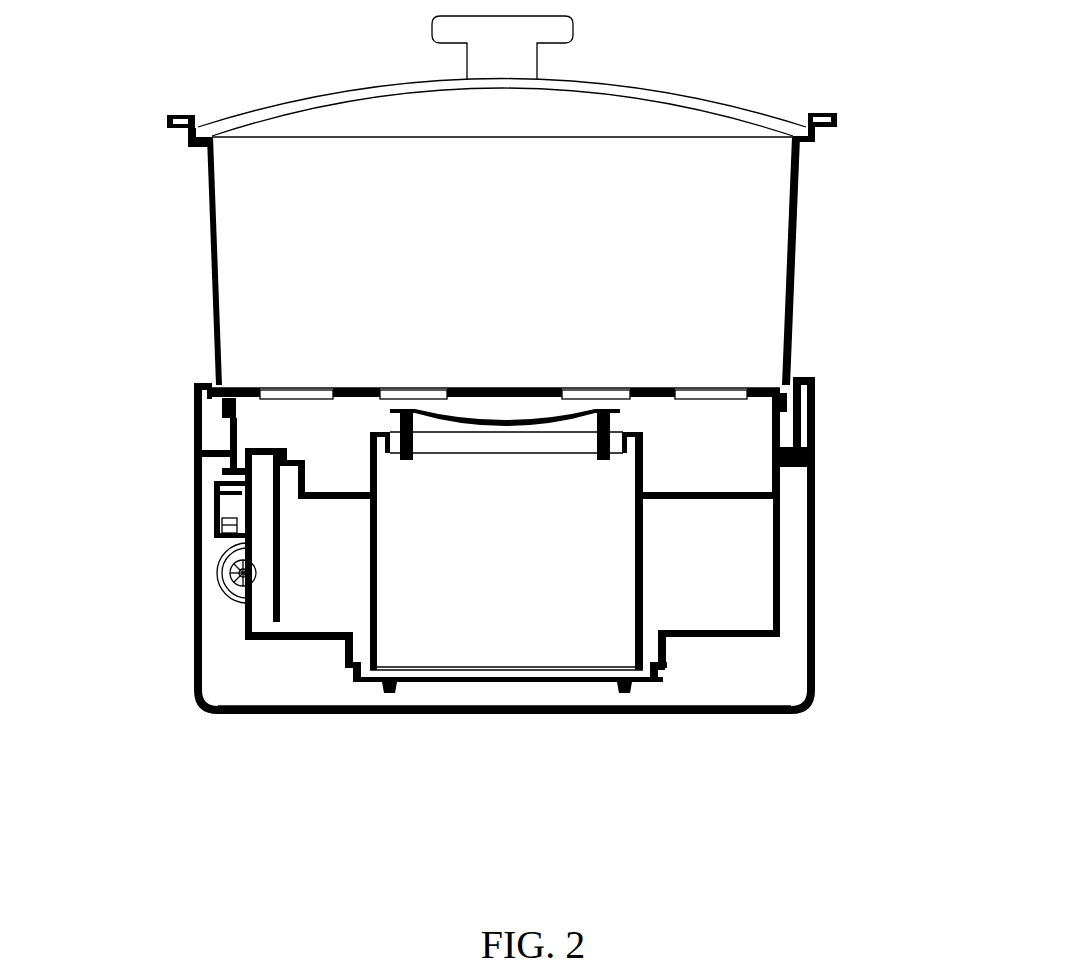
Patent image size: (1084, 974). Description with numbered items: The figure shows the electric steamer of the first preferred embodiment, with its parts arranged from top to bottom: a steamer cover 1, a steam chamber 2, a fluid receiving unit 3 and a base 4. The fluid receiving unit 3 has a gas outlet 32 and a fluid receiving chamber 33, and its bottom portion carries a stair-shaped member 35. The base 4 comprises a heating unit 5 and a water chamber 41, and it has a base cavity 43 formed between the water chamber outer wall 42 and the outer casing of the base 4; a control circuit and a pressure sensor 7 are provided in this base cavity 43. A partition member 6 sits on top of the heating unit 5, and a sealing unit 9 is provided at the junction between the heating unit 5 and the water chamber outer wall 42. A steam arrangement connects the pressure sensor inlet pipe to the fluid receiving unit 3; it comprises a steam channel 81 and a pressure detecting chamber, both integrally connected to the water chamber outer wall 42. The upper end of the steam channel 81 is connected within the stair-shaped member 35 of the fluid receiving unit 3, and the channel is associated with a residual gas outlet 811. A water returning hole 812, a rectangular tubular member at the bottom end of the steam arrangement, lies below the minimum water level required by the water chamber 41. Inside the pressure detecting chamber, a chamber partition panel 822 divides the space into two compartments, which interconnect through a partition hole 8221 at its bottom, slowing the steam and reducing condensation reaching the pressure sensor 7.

The steamer cover 1 is at (705, 103).
The steam chamber 2 is at (800, 256).
The fluid receiving unit 3 is at (817, 428).
The gas outlet 32 is at (627, 418).
The fluid receiving chamber 33 is at (298, 437).
The stair-shaped member 35 is at (302, 465).
The base 4 is at (817, 600).
The water chamber 41 is at (730, 520).
The water chamber outer wall 42 is at (777, 592).
The base cavity 43 is at (748, 665).
The heating unit 5 is at (410, 683).
The partition member 6 is at (637, 640).
The pressure sensor 7 is at (227, 575).
The sealing unit 9 is at (663, 670).
The steam channel 81 is at (260, 460).
The residual gas outlet 811 is at (247, 488).
The water returning hole 812 is at (280, 628).
The chamber partition panel 822 is at (233, 505).
The partition hole 8221 is at (222, 523).